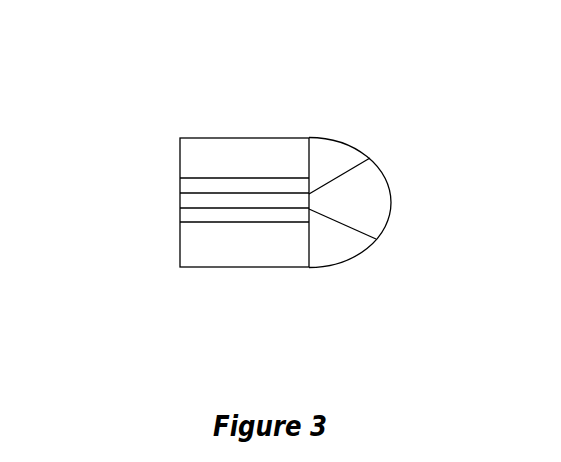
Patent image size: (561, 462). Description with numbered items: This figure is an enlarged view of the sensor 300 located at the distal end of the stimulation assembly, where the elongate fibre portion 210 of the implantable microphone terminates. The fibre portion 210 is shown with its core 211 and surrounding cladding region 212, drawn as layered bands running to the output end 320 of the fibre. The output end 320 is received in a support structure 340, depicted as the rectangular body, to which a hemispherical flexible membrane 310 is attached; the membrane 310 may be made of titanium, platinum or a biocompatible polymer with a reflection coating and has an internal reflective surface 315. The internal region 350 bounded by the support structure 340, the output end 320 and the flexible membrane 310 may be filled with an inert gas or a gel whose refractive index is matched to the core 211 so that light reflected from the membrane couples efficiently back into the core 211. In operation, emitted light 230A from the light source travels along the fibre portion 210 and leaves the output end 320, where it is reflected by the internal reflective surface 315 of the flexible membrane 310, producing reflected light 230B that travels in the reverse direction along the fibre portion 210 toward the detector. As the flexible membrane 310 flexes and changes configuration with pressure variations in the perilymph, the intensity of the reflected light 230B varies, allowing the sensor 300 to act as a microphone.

The sensor 300 is at (322, 124).
The flexible membrane 310 is at (380, 163).
The internal reflective surface 315 is at (384, 200).
The output end 320 is at (313, 201).
The support structure 340 is at (268, 138).
The internal region 350 is at (336, 152).
The fibre portion 210 is at (236, 178).
The core 211 is at (230, 199).
The cladding region 212 is at (278, 214).
The emitted light 230A is at (145, 198).
The reflected light 230B is at (37, 217).